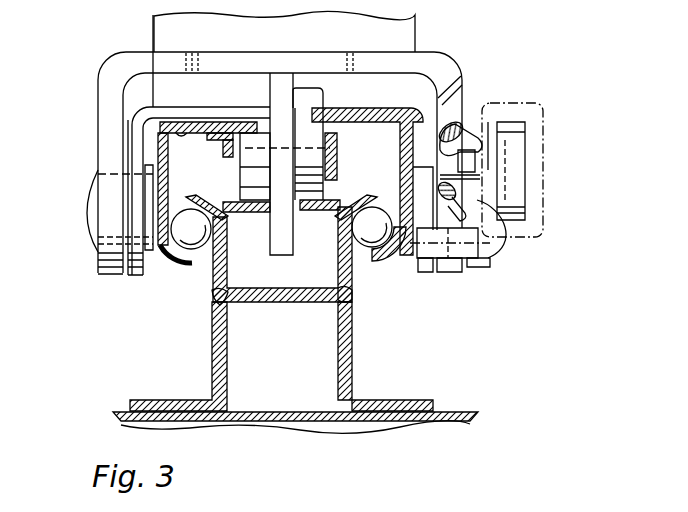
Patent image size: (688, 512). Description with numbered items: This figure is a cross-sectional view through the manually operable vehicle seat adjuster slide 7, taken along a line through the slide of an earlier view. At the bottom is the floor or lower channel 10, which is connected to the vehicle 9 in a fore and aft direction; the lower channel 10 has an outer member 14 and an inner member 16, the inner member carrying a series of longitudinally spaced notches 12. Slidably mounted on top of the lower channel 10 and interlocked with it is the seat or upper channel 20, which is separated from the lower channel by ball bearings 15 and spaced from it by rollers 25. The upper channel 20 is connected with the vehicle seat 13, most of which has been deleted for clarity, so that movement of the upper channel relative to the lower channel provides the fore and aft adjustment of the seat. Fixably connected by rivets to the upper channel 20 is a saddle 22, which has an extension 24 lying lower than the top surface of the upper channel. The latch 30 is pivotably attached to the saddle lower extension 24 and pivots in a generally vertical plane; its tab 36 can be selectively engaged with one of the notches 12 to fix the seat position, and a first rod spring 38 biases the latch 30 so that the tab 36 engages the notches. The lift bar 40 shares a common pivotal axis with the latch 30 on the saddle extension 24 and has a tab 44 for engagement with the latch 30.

The vehicle seat adjuster slide 7 is at (170, 98).
The vehicle 9 is at (446, 412).
The lower channel 10 is at (352, 265).
The notches 12 is at (266, 200).
The vehicle seat 13 is at (415, 30).
The outer member 14 is at (352, 288).
The ball bearings 15 is at (360, 233).
The inner member 16 is at (232, 250).
The upper channel 20 is at (181, 132).
The saddle 22 is at (137, 118).
The extension 24 is at (425, 273).
The rollers 25 is at (305, 162).
The latch 30 is at (437, 62).
The tab 36 is at (281, 268).
The first rod spring 38 is at (465, 123).
The lift bar 40 is at (517, 178).
The tab 44 is at (468, 250).